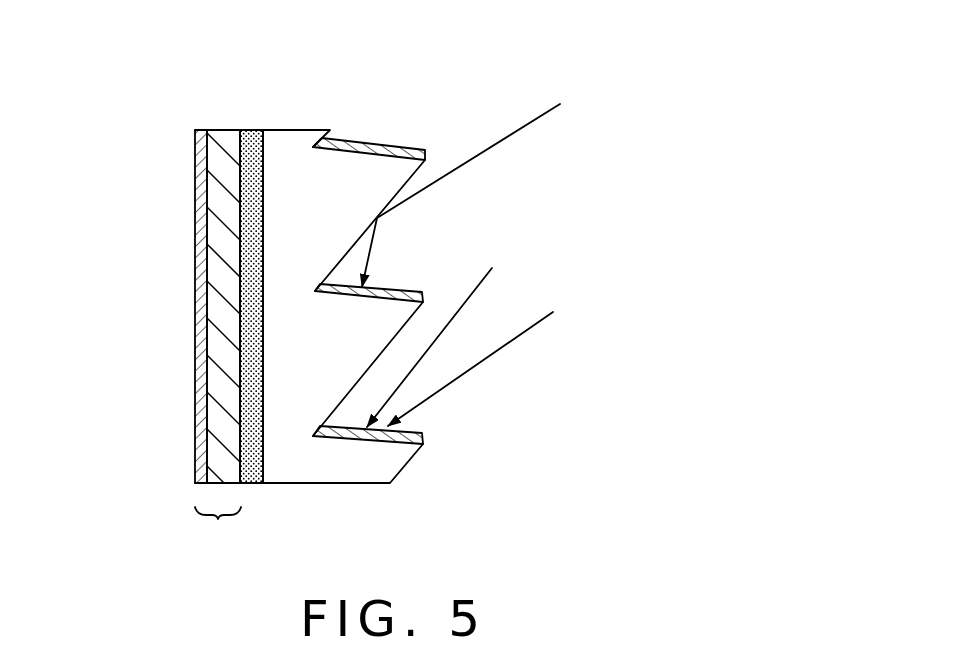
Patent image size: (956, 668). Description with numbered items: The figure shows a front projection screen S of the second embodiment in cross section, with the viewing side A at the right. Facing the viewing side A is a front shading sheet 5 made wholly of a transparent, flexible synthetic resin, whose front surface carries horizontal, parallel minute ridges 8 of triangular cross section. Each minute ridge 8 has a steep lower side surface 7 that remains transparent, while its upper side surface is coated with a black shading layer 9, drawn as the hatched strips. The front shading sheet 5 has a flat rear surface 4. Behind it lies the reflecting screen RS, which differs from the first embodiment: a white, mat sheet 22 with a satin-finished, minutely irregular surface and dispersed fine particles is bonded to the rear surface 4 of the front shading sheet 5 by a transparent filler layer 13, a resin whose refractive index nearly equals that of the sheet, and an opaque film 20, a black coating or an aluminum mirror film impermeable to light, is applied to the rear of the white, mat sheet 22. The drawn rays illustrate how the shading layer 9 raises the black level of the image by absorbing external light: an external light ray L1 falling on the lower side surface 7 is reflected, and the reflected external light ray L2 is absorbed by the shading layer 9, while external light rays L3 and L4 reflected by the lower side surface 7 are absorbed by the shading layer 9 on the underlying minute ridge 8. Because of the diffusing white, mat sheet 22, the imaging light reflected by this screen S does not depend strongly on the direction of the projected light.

The rear surface 4 is at (263, 362).
The front shading sheet 5 is at (294, 162).
The lower side surface 7 is at (430, 167).
The minute ridge 8 is at (392, 313).
The shading layer 9 is at (403, 284).
The transparent filler layer 13 is at (252, 132).
The opaque film 20 is at (196, 253).
The white mat sheet 22 is at (223, 133).
The external light ray L1 is at (489, 153).
The reflected external light ray L2 is at (388, 252).
The external light ray L3 is at (495, 361).
The external light ray L4 is at (453, 338).
The front projection screen S is at (431, 40).
The viewing side A is at (715, 278).
The reflecting screen RS is at (218, 529).